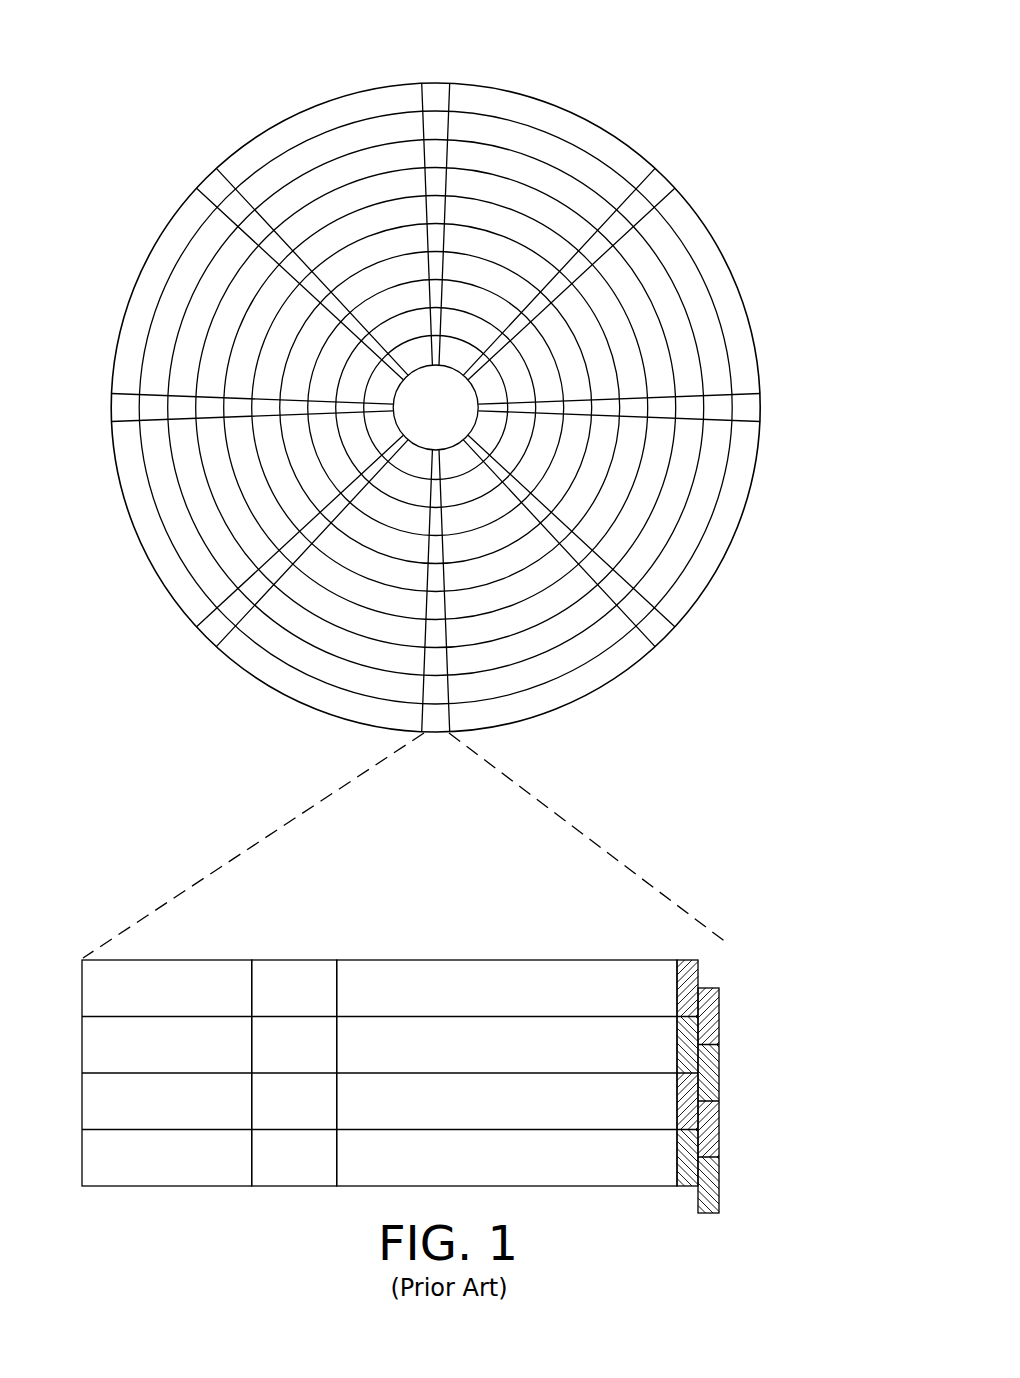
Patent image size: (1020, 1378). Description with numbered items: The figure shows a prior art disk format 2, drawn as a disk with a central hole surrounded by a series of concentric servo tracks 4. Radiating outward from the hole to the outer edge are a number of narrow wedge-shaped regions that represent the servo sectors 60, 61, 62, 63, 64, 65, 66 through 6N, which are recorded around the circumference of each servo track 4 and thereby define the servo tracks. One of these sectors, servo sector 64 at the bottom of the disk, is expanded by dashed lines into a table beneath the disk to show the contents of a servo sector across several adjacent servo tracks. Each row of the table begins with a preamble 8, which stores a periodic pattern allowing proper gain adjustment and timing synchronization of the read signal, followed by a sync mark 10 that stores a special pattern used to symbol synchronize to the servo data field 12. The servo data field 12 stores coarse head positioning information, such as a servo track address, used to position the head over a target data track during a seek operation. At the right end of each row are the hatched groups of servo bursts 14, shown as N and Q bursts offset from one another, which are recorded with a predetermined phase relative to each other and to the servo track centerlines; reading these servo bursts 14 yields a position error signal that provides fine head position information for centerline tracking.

The disk format 2 is at (194, 85).
The servo track 4 is at (568, 128).
The servo sector 60 is at (437, 92).
The servo sector 61 is at (657, 185).
The servo sector 62 is at (752, 409).
The servo sector 63 is at (657, 630).
The servo sector 64 is at (290, 805).
The servo sector 65 is at (212, 633).
The servo sector 66 is at (116, 408).
The servo sector 6N is at (213, 183).
The preamble 8 is at (175, 958).
The sync mark 10 is at (296, 958).
The servo data field 12 is at (491, 958).
The servo bursts 14 is at (720, 953).